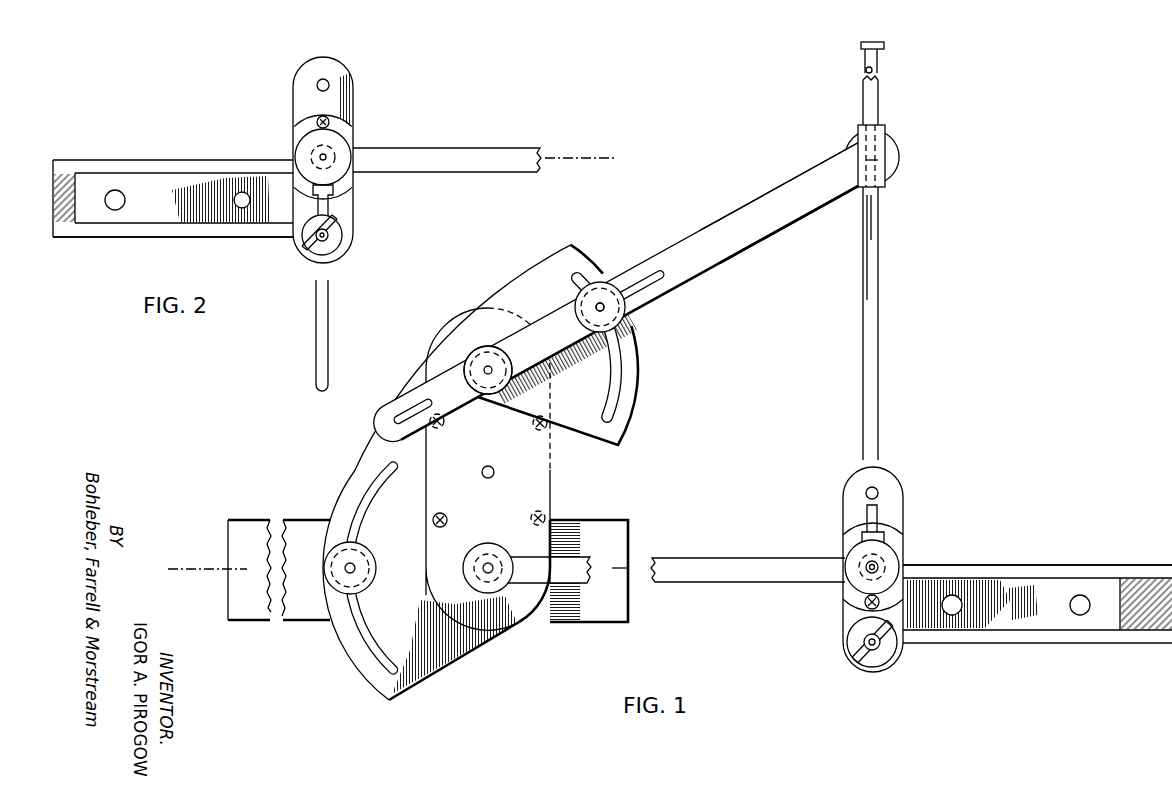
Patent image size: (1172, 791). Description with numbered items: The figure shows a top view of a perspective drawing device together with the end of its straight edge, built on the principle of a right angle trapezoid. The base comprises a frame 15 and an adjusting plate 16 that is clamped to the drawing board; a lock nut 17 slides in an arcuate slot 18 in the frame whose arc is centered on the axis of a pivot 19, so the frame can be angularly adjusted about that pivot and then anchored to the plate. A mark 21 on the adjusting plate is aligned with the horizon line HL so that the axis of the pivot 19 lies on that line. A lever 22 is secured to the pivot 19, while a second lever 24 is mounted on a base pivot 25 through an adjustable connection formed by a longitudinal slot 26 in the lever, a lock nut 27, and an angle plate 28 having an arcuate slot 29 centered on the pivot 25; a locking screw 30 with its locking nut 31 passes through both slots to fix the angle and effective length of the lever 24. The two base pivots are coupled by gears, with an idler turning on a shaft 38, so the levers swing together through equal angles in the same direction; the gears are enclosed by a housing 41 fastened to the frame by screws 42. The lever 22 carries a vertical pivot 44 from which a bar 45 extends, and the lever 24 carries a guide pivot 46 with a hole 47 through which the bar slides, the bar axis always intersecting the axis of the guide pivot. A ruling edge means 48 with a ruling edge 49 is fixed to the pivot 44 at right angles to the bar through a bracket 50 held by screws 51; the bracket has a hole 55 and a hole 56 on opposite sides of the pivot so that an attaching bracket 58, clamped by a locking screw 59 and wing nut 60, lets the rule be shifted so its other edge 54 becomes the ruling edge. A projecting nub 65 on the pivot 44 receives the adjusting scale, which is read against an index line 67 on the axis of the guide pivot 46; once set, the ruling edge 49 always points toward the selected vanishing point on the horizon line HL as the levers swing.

In FIG. 1, the frame 15 is at (372, 452).
In FIG. 1, the adjusting plate 16 is at (612, 530).
In FIG. 1, the lock nut 17 is at (343, 585).
In FIG. 1, the arcuate slot 18 is at (374, 650).
In FIG. 1, the pivot 19 is at (484, 588).
In FIG. 1, the indicia or mark 21 is at (620, 575).
In FIG. 1, the lever 22 is at (735, 582).
In FIG. 2, the lever 22 is at (433, 150).
In FIG. 1, the lever 24 is at (722, 263).
In FIG. 1, the base pivot 25 is at (488, 362).
In FIG. 1, the longitudinal slot 26 is at (412, 404).
In FIG. 1, the lock nut 27 is at (474, 372).
In FIG. 1, the angle plate 28 is at (533, 300).
In FIG. 1, the arcuate slot 29 is at (610, 413).
In FIG. 1, the locking screw 30 is at (606, 298).
In FIG. 1, the locking nut 31 is at (599, 300).
In FIG. 1, the shaft 38 is at (494, 470).
In FIG. 1, the housing 41 is at (540, 472).
In FIG. 1, the screws 42 is at (548, 428).
In FIG. 1, the pivot 44 is at (853, 550).
In FIG. 2, the pivot 44 is at (300, 142).
In FIG. 1, the bar 45 is at (863, 318).
In FIG. 2, the bar 45 is at (338, 205).
In FIG. 1, the guide pivot 46 is at (897, 157).
In FIG. 1, the hole 47 is at (887, 180).
In FIG. 1, the ruling edge means 48 is at (1146, 628).
In FIG. 2, the ruling edge means 48 is at (70, 176).
In FIG. 1, the ruling edge 49 is at (1117, 566).
In FIG. 2, the ruling edge 49 is at (80, 243).
In FIG. 1, the bracket 50 is at (852, 620).
In FIG. 2, the bracket 50 is at (305, 87).
In FIG. 1, the screws 51 is at (860, 604).
In FIG. 1, the other edge 54 is at (1120, 650).
In FIG. 2, the other edge 54 is at (198, 160).
In FIG. 2, the hole 55 is at (330, 82).
In FIG. 1, the hole 56 is at (880, 493).
In FIG. 1, the attaching bracket 58 is at (1048, 625).
In FIG. 2, the attaching bracket 58 is at (156, 212).
In FIG. 1, the locking screw 59 is at (858, 640).
In FIG. 2, the locking screw 59 is at (343, 250).
In FIG. 1, the wing nut 60 is at (890, 655).
In FIG. 2, the wing nut 60 is at (300, 236).
In FIG. 1, the projecting nub 65 is at (865, 601).
In FIG. 2, the projecting nub 65 is at (332, 150).
In FIG. 1, the index line 67 is at (878, 157).
In FIG. 1, the horizon line HL is at (213, 562).
In FIG. 2, the horizon line HL is at (578, 150).